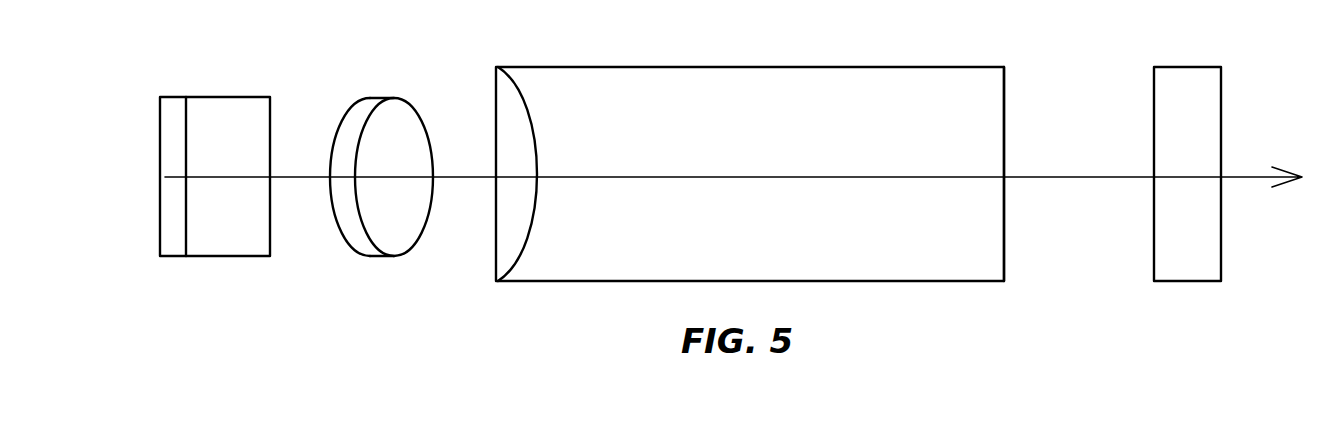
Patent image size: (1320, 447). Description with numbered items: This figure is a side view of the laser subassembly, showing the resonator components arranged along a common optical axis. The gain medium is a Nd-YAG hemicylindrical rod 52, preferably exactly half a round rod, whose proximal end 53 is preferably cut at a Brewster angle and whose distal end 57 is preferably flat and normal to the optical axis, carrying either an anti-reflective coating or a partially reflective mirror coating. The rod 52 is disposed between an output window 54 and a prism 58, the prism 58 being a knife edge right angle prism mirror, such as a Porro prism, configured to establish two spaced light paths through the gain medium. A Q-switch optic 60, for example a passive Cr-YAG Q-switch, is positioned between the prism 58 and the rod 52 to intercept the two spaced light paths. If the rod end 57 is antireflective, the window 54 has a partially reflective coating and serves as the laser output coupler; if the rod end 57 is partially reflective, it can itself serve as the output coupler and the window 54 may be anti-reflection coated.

The hemicylindrical rod 52 is at (905, 67).
The proximal end 53 is at (513, 100).
The output window 54 is at (1199, 255).
The distal end 57 is at (1006, 80).
The prism 58 is at (223, 97).
The Q-switch optic 60 is at (379, 98).